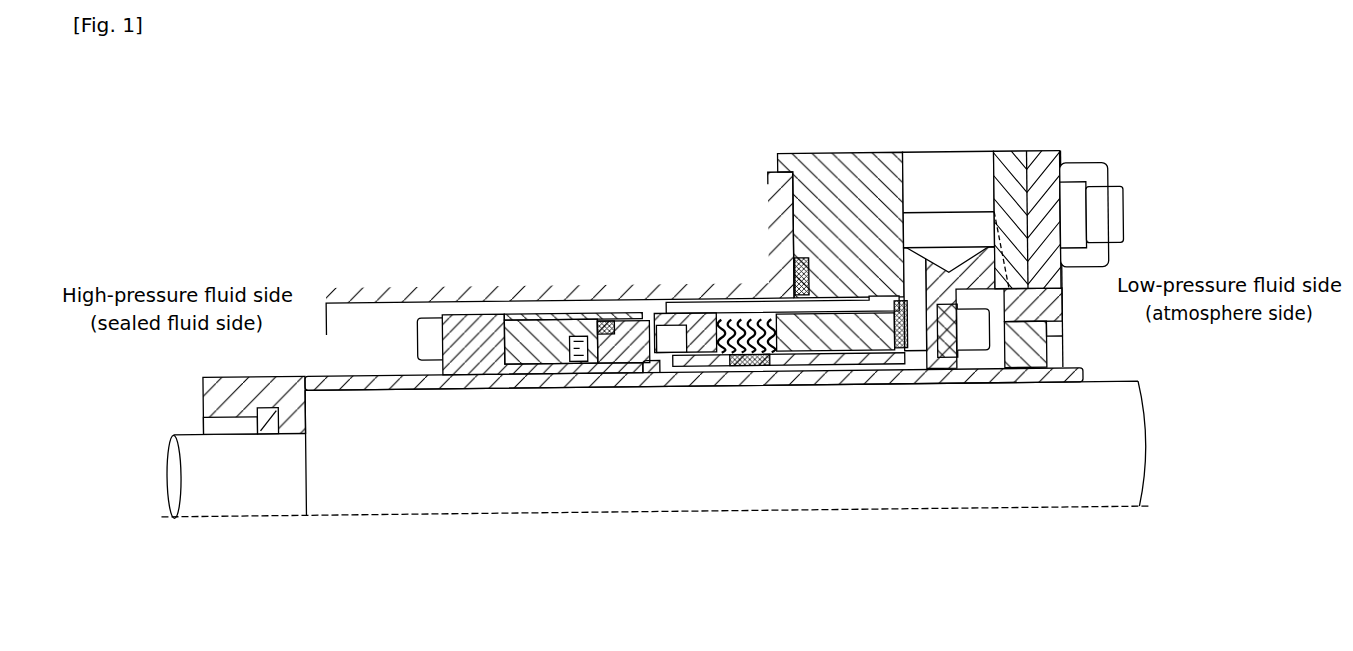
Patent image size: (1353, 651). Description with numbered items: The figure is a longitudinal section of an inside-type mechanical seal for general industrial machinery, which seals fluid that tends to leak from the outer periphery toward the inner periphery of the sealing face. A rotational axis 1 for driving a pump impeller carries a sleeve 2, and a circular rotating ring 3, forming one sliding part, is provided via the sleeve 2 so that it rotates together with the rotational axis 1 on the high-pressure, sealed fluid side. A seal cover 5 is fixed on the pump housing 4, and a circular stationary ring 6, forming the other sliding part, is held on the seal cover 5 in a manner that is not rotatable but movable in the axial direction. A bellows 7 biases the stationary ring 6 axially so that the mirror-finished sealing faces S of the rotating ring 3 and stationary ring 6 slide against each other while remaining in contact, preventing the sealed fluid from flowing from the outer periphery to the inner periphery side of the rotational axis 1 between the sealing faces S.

The rotational axis 1 is at (366, 481).
The sleeve 2 is at (884, 388).
The rotating ring 3 is at (628, 318).
The pump housing 4 is at (521, 249).
The seal cover 5 is at (838, 154).
The stationary ring 6 is at (676, 322).
The bellows 7 is at (738, 321).
The sealing faces S is at (657, 373).